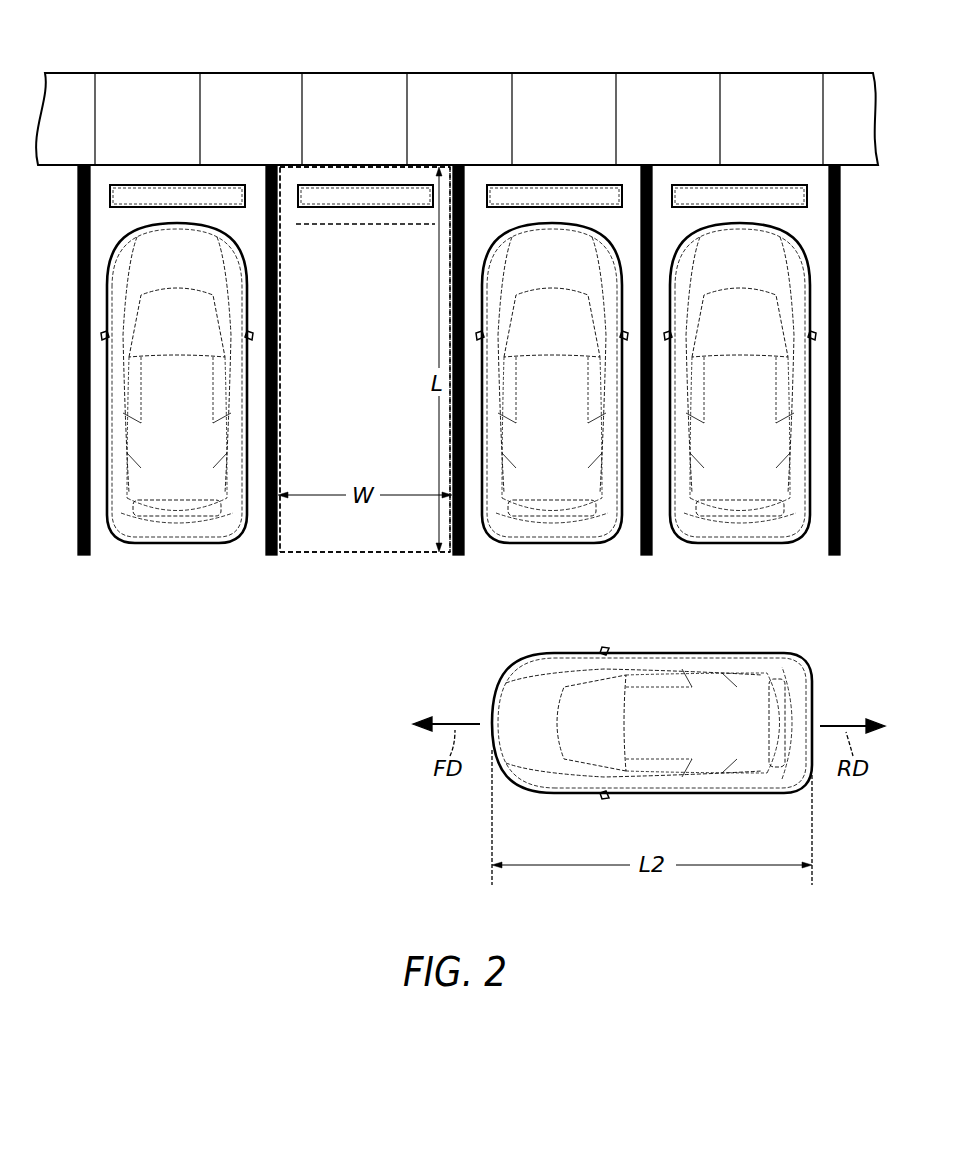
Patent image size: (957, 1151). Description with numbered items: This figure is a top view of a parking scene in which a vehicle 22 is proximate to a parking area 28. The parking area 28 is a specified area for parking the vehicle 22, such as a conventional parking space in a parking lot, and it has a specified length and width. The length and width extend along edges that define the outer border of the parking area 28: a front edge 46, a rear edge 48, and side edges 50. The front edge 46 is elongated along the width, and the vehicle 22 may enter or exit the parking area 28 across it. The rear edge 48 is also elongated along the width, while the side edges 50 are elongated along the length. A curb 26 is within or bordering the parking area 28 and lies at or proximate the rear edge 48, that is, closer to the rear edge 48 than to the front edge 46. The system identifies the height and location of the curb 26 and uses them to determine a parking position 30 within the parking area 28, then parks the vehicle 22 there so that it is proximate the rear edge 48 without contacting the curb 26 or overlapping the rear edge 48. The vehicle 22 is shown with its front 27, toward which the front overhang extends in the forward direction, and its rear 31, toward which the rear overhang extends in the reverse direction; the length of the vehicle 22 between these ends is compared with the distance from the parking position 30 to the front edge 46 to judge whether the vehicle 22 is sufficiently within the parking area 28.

The vehicle 22 is at (720, 793).
The curb 26 is at (370, 196).
The front 27 is at (490, 717).
The parking area 28 is at (372, 553).
The parking position 30 is at (360, 226).
The rear 31 is at (814, 717).
The front edge 46 is at (315, 553).
The rear edge 48 is at (330, 178).
The side edges 50 is at (286, 185).